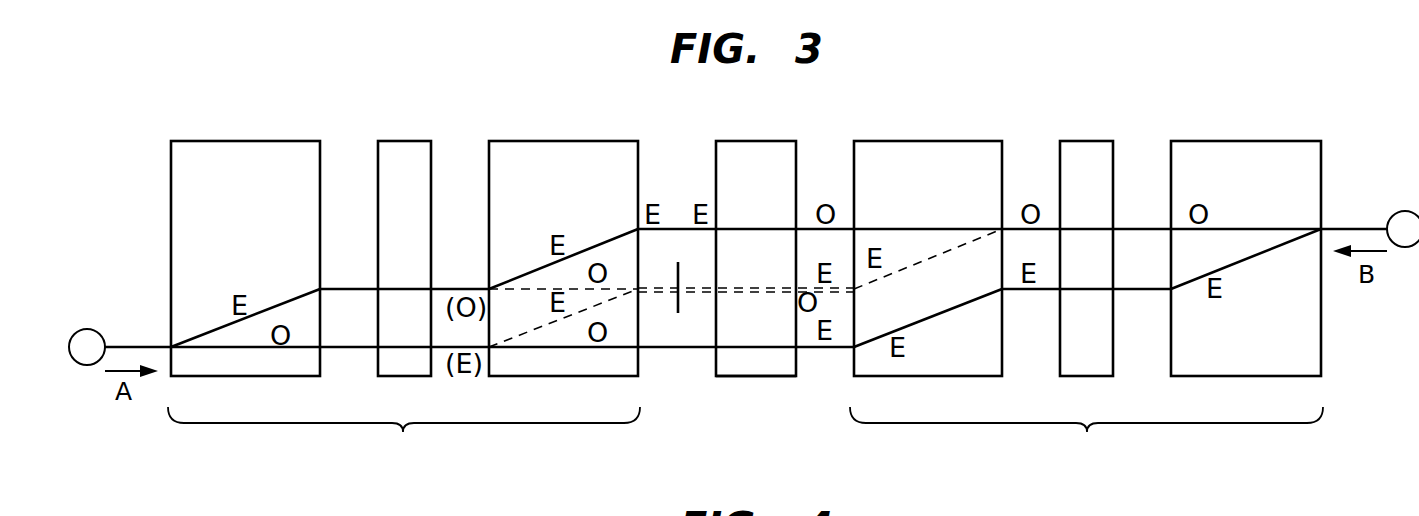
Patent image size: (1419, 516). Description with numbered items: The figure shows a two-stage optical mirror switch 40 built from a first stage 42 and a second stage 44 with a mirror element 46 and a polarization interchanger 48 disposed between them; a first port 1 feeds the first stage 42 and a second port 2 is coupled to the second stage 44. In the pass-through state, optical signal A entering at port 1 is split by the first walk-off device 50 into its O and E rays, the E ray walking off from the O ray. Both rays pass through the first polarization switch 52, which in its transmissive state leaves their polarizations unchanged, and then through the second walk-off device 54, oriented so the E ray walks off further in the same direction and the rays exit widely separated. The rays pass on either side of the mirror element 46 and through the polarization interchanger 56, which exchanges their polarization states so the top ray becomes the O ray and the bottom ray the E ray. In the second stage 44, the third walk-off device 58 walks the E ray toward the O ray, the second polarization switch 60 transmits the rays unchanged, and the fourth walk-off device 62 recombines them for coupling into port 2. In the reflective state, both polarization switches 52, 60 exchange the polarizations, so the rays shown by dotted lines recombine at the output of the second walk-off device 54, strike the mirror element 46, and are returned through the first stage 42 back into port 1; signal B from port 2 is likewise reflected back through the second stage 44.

In FIG. 3, the first port 1 is at (87, 347).
In FIG. 3, the second port 2 is at (1403, 229).
In FIG. 4, the two-stage optical mirror switch 40 is at (1192, 494).
In FIG. 3, the first stage 42 is at (404, 436).
In FIG. 3, the second stage 44 is at (1086, 436).
In FIG. 3, the mirror element 46 is at (680, 280).
In FIG. 3, the polarization interchanger 48 is at (757, 377).
In FIG. 3, the first walk-off device 50 is at (233, 141).
In FIG. 3, the first polarization switch 52 is at (378, 173).
In FIG. 3, the second walk-off device 54 is at (580, 141).
In FIG. 3, the polarization interchanger 56 is at (728, 141).
In FIG. 3, the third walk-off device 58 is at (915, 141).
In FIG. 3, the second polarization switch 60 is at (1060, 171).
In FIG. 3, the fourth walk-off device 62 is at (1262, 141).